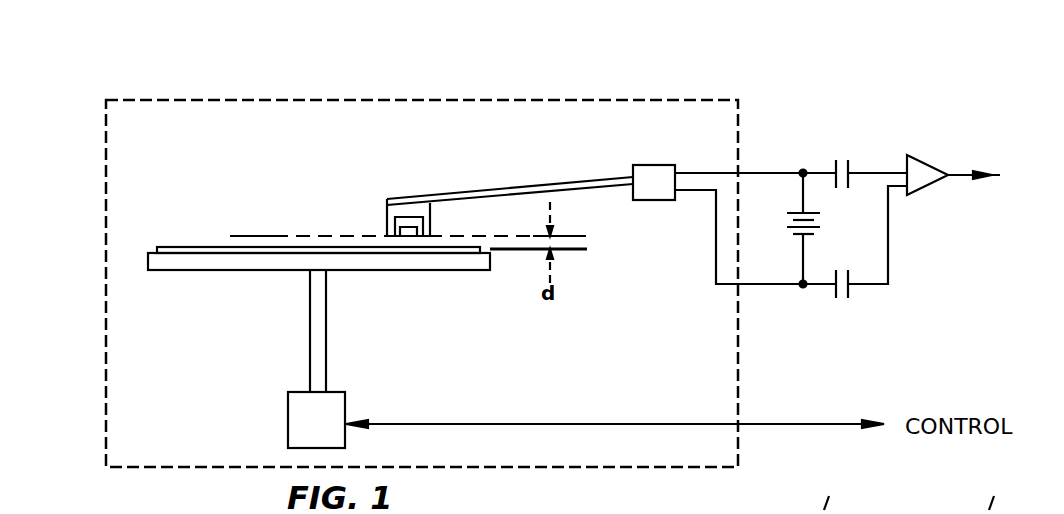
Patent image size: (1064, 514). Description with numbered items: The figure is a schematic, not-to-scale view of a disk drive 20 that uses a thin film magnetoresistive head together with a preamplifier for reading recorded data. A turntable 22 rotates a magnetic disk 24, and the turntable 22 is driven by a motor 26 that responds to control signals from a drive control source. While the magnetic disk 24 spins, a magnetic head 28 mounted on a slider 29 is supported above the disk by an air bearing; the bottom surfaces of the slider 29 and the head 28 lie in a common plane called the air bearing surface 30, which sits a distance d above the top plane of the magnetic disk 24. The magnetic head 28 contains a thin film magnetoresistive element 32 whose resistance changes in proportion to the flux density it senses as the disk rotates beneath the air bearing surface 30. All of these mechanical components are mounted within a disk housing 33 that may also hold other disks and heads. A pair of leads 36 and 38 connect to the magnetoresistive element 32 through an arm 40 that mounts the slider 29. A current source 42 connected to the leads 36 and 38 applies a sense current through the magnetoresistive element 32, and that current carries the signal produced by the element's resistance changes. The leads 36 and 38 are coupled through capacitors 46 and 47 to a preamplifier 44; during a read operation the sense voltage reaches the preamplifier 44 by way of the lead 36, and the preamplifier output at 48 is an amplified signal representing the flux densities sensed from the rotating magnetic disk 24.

The disk drive 20 is at (364, 66).
The turntable 22 is at (200, 270).
The magnetic disk 24 is at (158, 247).
The motor 26 is at (288, 418).
The magnetic head 28 is at (386, 224).
The slider 29 is at (430, 221).
The air bearing surface 30 is at (300, 236).
The magnetoresistive element 32 is at (410, 237).
The disk housing 33 is at (410, 100).
The lead 36 is at (752, 173).
The lead 38 is at (716, 206).
The arm 40 is at (487, 191).
The current source 42 is at (787, 222).
The preamplifier 44 is at (925, 165).
The capacitor 46 is at (848, 172).
The capacitor 47 is at (850, 294).
The output of the preamplifier 48 is at (958, 173).